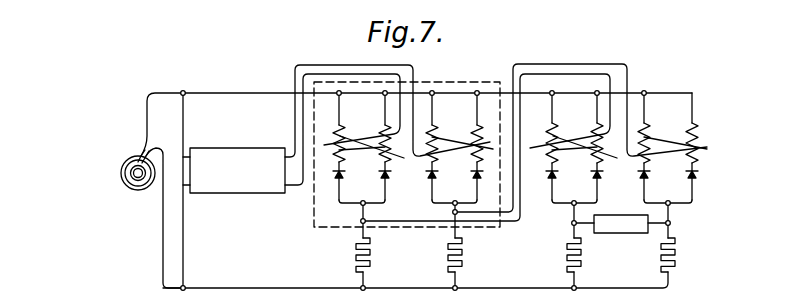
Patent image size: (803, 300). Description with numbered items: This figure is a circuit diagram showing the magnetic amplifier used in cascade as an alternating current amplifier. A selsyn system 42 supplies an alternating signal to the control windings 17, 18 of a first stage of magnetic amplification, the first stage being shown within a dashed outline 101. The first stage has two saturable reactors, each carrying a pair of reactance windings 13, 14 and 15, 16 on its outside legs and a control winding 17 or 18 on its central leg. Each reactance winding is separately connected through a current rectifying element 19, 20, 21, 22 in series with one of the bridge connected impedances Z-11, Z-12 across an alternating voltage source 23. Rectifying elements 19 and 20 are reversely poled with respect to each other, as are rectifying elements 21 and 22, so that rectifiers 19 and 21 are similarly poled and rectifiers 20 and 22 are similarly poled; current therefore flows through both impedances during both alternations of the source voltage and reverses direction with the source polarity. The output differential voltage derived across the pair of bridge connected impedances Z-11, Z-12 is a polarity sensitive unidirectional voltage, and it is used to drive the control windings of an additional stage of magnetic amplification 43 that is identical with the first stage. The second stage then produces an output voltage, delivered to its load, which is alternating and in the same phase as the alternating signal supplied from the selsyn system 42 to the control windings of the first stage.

The alternating voltage source 23 is at (121, 173).
The selsyn system 42 is at (237, 196).
The magnetic amplifier stage (dashed block) 101 is at (470, 82).
The reactance winding 13 is at (340, 125).
The reactance winding 14 is at (383, 125).
The reactance winding 15 is at (433, 125).
The reactance winding 16 is at (476, 125).
The control winding 17 is at (362, 152).
The control winding 18 is at (454, 152).
The current rectifying element 19 is at (336, 178).
The current rectifying element 20 is at (382, 177).
The current rectifying element 21 is at (428, 178).
The current rectifying element 22 is at (473, 177).
The bridge connected impedance Z-11 is at (372, 252).
The bridge connected impedance Z-12 is at (464, 252).
The additional stage of magnetic amplification 43 is at (657, 83).